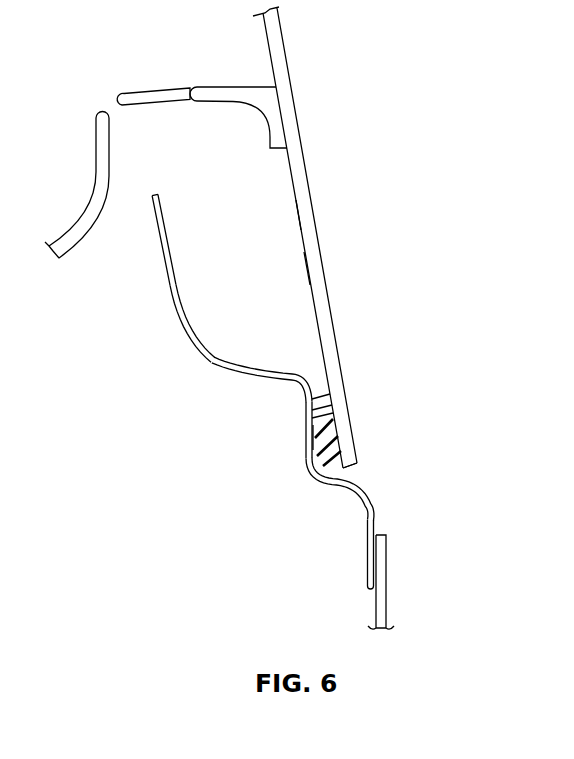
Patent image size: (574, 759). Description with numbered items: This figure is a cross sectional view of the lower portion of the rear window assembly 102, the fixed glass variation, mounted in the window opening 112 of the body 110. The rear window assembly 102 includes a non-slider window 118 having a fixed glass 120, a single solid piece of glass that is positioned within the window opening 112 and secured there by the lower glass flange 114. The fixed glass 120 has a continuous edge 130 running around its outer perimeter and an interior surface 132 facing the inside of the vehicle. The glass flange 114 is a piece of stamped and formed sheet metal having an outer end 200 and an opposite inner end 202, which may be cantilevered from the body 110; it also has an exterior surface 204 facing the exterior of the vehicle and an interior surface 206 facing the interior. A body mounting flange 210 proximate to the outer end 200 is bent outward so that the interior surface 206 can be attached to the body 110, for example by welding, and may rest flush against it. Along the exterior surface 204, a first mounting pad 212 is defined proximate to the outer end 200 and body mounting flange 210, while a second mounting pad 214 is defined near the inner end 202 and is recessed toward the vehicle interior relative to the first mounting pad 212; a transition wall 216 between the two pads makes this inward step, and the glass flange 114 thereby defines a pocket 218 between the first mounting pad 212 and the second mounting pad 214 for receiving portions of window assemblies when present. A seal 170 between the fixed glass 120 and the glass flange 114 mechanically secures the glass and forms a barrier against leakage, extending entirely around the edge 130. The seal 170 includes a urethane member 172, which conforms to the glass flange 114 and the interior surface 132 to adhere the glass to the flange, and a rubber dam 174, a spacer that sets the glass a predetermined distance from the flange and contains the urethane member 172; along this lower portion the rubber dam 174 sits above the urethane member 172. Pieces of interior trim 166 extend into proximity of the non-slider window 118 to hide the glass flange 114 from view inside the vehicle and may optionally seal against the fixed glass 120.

The rear window assembly 102 is at (436, 117).
The body 110 is at (380, 610).
The window opening 112 is at (392, 326).
The glass flange 114 is at (222, 365).
The non-slider window 118 is at (311, 124).
The fixed glass 120 is at (307, 228).
The edge 130 is at (353, 469).
The interior surface 132 is at (313, 302).
The interior trim 166 is at (232, 88).
The seal 170 is at (313, 436).
The urethane member 172 is at (313, 462).
The rubber dam 174 is at (323, 412).
The outer end 200 is at (372, 588).
The inner end 202 is at (157, 188).
The exterior surface 204 is at (373, 527).
The interior surface 206 is at (369, 533).
The body mounting flange 210 is at (371, 556).
The first mounting pad 212 is at (327, 434).
The second mounting pad 214 is at (181, 308).
The transition wall 216 is at (258, 363).
The pocket 218 is at (213, 252).